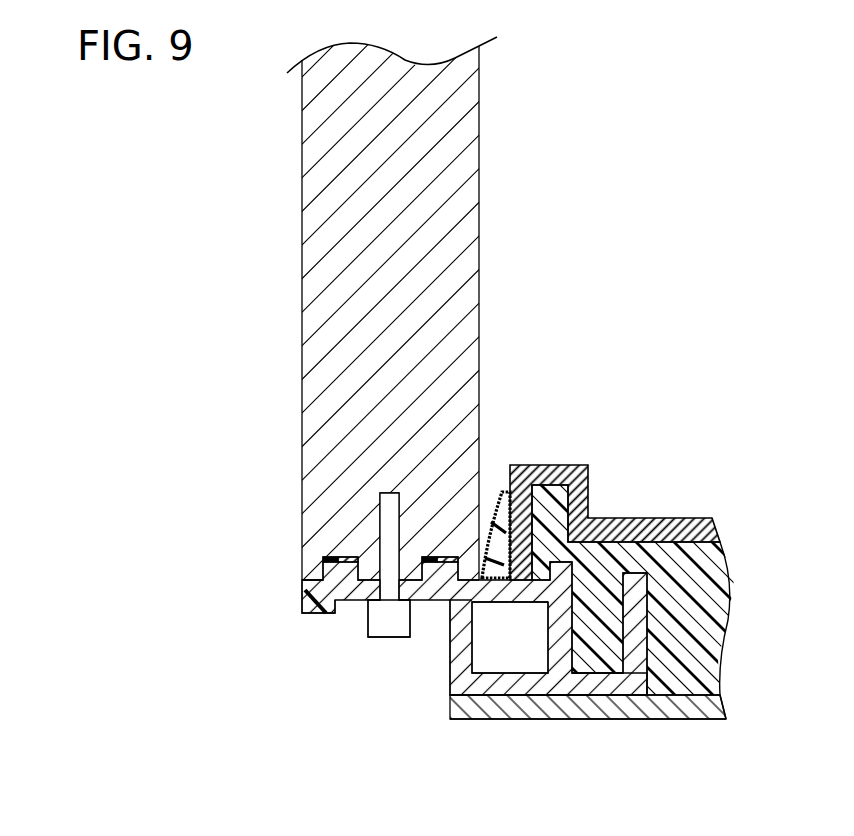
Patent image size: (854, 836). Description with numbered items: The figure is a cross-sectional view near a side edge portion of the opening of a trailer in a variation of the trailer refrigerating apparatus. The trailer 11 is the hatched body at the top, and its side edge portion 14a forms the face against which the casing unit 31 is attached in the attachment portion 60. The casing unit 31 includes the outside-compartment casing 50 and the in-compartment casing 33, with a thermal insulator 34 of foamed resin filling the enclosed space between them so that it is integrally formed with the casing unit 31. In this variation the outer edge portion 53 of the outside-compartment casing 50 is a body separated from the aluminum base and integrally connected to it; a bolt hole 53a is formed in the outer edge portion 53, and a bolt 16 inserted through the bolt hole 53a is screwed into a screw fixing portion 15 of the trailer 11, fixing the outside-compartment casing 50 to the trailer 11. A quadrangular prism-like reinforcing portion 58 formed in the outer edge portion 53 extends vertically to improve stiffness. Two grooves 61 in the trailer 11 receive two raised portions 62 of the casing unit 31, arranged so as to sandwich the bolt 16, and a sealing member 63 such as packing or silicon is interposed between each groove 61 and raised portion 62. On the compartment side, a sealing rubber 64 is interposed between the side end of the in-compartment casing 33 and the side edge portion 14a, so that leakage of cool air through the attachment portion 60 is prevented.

The trailer 11 is at (300, 197).
The side edge portion 14a is at (300, 582).
The screw fixing portion 15 is at (383, 516).
The bolt 16 is at (387, 640).
The casing unit 31 is at (682, 735).
The in-compartment casing 33 is at (625, 520).
The thermal insulator 34 is at (672, 548).
The outside-compartment casing 50 is at (593, 721).
The outer edge portion 53 is at (348, 605).
The bolt hole 53a is at (519, 647).
The reinforcing portion 58 is at (447, 683).
The attachment portion 60 is at (303, 623).
The groove 61 is at (335, 559).
The raised portion 62 is at (328, 613).
The sealing member 63 is at (325, 563).
The sealing rubber 64 is at (500, 492).